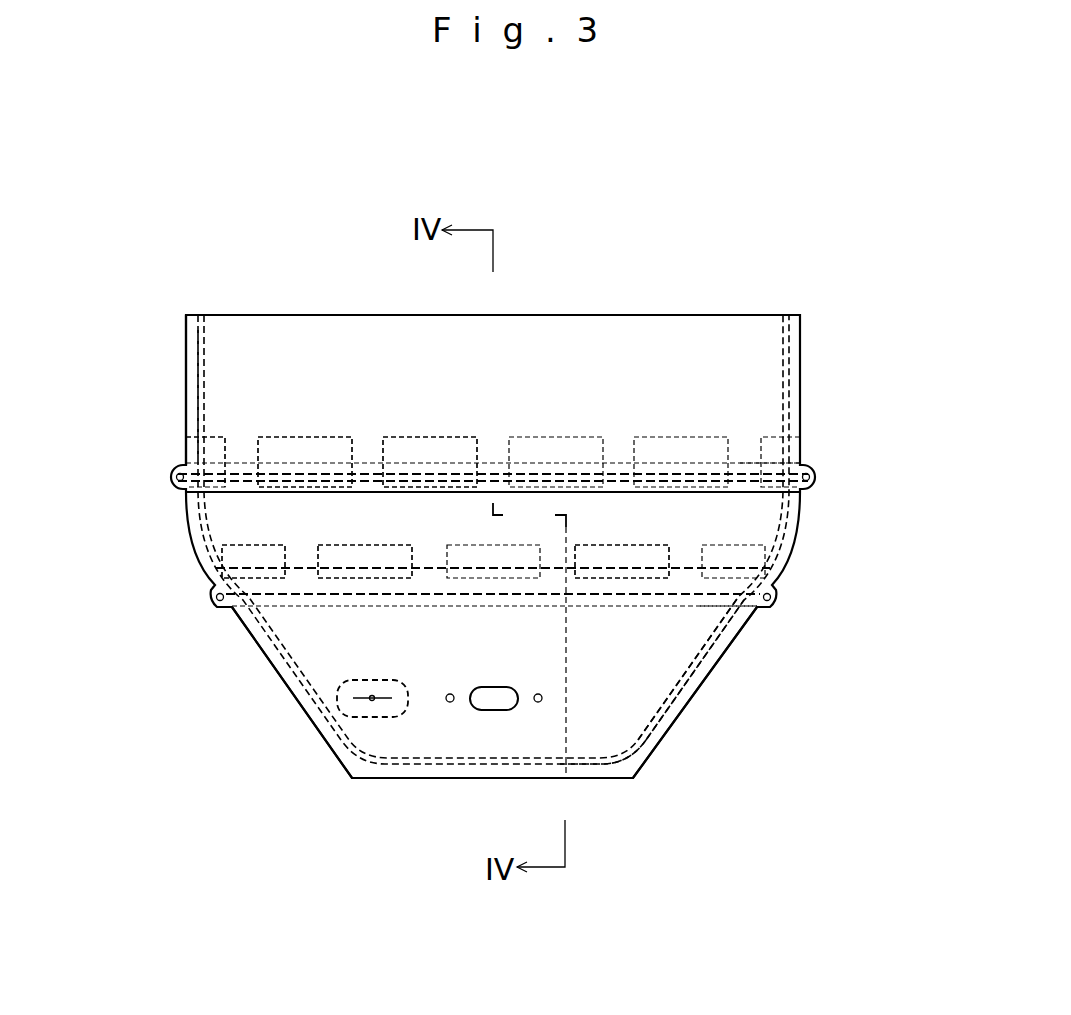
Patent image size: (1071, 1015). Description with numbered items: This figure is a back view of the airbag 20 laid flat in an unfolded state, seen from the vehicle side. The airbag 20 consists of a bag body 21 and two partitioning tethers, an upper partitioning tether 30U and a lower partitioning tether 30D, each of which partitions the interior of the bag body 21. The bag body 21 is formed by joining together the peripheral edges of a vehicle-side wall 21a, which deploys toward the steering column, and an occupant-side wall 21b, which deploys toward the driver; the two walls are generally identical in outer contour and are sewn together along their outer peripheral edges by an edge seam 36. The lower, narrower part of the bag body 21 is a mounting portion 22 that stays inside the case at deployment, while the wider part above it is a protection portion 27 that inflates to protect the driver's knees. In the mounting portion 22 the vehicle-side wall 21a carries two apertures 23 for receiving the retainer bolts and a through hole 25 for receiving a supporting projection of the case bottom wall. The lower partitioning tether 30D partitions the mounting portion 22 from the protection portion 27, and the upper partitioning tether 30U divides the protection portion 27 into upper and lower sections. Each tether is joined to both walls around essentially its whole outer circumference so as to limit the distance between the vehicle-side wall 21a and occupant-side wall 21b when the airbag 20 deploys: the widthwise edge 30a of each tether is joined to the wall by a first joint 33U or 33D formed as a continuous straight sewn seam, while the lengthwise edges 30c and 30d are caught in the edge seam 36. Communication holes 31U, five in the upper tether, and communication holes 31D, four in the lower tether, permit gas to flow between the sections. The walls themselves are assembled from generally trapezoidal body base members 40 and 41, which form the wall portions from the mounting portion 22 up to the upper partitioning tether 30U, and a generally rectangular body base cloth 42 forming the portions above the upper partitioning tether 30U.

The airbag 20 is at (735, 232).
The bag body 21 is at (773, 310).
The vehicle-side wall 21a is at (257, 333).
The occupant-side wall 21b is at (298, 330).
The mounting portion 22 is at (305, 720).
The apertures 23 is at (450, 702).
The through hole 25 is at (494, 688).
The protection portion 27 is at (181, 345).
The upper partitioning tether 30U is at (771, 428).
The lower partitioning tether 30D is at (756, 534).
The first edge in the width direction 30a is at (430, 492).
The first edge in the length direction 30c is at (792, 453).
The second edge in the length direction 30d is at (197, 455).
The communication holes 31U is at (257, 455).
The communication holes 31D is at (410, 553).
The first joint 33U is at (556, 470).
The first joint 33D is at (263, 578).
The edge seam 36 is at (697, 675).
The body base member 40 is at (397, 745).
The body base member 41 is at (625, 740).
The body base cloth 42 is at (605, 337).